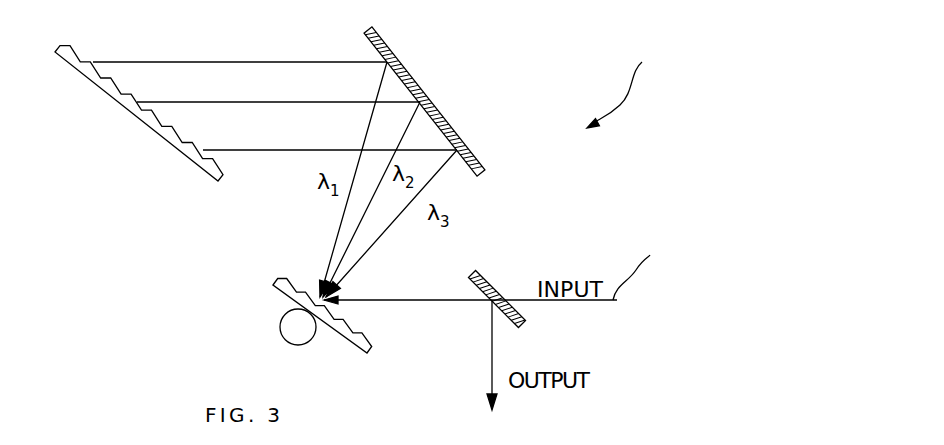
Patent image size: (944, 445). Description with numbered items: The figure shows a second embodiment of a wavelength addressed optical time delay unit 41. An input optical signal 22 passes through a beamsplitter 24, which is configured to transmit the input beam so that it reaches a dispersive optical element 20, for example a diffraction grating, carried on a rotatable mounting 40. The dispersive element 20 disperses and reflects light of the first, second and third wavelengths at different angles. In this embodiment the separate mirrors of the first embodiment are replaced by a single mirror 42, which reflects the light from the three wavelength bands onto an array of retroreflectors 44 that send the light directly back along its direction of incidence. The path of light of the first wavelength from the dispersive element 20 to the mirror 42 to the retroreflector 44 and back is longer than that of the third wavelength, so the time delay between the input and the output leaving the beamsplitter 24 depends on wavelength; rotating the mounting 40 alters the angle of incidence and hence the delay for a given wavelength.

The dispersive optical element 20 is at (274, 291).
The input optical signal 22 is at (639, 266).
The beamsplitter 24 is at (485, 276).
The rotatable mounting 40 is at (282, 335).
The time delay unit 41 is at (627, 83).
The mirror 42 is at (397, 53).
The array of retroreflectors 44 is at (104, 96).